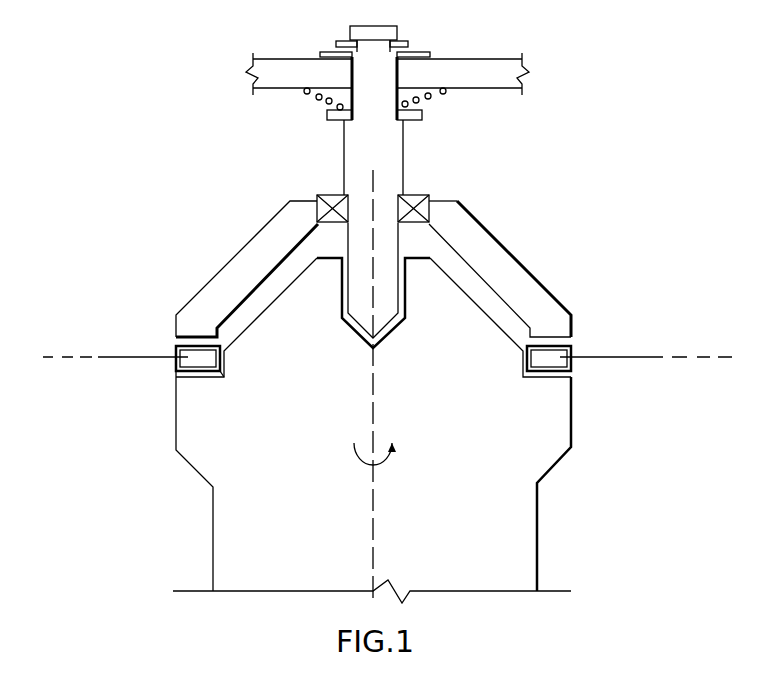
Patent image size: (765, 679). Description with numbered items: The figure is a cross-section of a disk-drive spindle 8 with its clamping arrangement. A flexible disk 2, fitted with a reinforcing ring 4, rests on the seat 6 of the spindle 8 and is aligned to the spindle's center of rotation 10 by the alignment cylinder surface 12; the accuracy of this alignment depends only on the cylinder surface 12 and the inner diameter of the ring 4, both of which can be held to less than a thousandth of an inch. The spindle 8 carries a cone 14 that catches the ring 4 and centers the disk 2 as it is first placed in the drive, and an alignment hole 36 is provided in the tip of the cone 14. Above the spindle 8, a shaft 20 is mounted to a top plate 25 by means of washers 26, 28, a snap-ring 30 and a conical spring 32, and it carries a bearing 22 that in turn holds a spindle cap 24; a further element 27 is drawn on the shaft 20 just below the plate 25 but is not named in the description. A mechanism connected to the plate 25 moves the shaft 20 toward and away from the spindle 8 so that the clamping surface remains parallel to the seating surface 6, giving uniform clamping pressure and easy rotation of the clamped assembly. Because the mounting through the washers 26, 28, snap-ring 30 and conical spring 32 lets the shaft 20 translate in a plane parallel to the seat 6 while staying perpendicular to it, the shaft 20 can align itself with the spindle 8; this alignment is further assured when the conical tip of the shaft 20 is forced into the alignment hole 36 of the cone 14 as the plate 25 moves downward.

The flexible disk 2 is at (651, 353).
The reinforcing ring 4 is at (574, 352).
The seat 6 is at (554, 379).
The spindle 8 is at (541, 514).
The center of rotation 10 is at (377, 526).
The alignment cylinder surface 12 is at (232, 368).
The cone 14 is at (246, 337).
The shaft 20 is at (342, 168).
The bearing 22 is at (409, 193).
The spindle cap 24 is at (541, 279).
The top plate 25 is at (474, 58).
The washer 26 is at (203, 336).
The collar 27 is at (325, 120).
The washer 28 is at (325, 47).
The snap-ring 30 is at (409, 43).
The conical spring 32 is at (432, 99).
The alignment hole 36 is at (339, 293).